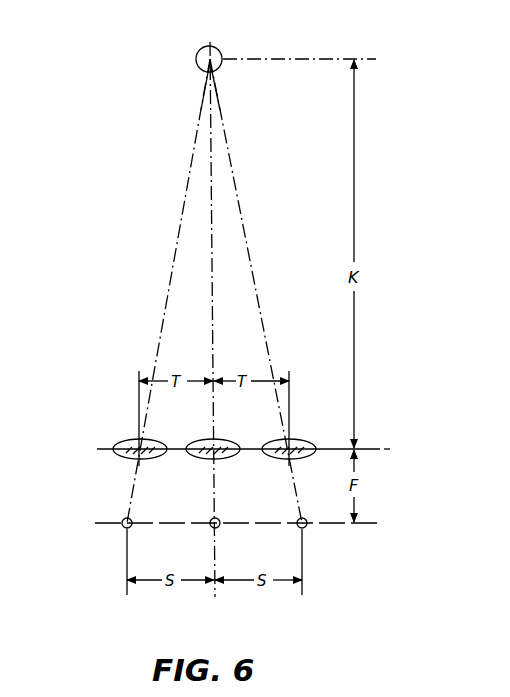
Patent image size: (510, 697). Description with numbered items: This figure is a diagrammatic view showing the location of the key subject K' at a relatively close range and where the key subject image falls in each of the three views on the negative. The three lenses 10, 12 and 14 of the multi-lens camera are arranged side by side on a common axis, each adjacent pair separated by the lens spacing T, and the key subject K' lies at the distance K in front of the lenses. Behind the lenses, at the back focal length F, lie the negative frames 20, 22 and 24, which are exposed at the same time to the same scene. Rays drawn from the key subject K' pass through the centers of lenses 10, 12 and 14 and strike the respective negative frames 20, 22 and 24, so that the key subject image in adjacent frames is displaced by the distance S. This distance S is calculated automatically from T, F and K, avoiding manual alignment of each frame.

The camera lens 10 is at (121, 440).
The camera lens 12 is at (201, 441).
The camera lens 14 is at (276, 441).
The negative frame 20 is at (122, 519).
The negative frame 22 is at (211, 519).
The negative frame 24 is at (297, 519).
The key subject K' is at (229, 41).